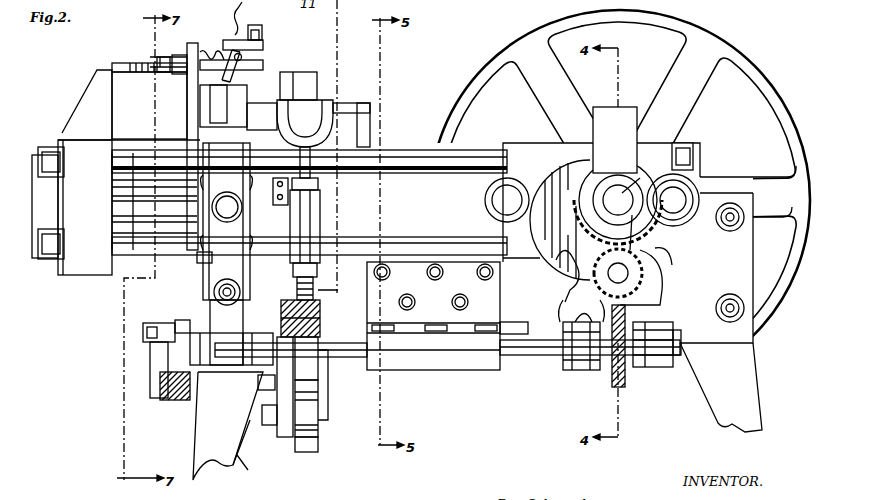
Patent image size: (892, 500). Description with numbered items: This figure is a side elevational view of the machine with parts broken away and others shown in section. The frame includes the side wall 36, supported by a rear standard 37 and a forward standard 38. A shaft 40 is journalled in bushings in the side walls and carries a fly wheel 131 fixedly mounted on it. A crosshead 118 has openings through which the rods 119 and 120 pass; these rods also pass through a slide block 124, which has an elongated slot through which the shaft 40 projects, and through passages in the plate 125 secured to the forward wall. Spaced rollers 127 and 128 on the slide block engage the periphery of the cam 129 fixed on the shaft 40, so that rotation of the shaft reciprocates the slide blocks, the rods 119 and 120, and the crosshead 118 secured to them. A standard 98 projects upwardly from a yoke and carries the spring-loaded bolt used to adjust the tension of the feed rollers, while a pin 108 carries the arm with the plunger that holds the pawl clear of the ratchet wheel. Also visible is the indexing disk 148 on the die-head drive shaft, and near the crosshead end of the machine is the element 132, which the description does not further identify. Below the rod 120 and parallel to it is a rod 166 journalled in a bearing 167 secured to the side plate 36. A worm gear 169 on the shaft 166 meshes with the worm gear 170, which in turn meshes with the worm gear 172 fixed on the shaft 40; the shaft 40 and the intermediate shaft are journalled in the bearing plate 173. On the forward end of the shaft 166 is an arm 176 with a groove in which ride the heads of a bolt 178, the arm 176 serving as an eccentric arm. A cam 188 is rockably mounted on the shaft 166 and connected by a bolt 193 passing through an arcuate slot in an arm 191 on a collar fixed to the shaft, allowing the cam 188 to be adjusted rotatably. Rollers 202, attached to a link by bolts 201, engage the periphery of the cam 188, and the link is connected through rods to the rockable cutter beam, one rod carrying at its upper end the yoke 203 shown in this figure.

The side wall 36 is at (728, 251).
The rear standard 37 is at (718, 408).
The forward standard 38 is at (240, 460).
The shaft 40 is at (663, 132).
The standard 98 is at (195, 108).
The pin 108 is at (248, 17).
The crosshead 118 is at (76, 276).
The rod 119 is at (400, 160).
The rod 120 is at (447, 247).
The slide block 124 is at (520, 160).
The plate 125 is at (197, 262).
The roller 127 is at (705, 176).
The roller 128 is at (482, 198).
The cam 129 is at (545, 333).
The fly wheel 131 is at (742, 64).
The cylinder block 132 is at (132, 160).
The indexing disk 148 is at (178, 300).
The rod 166 is at (318, 363).
The bearing 167 is at (446, 355).
The worm gear 169 is at (626, 378).
The worm gear 170 is at (575, 355).
The worm gear 172 is at (692, 146).
The bearing plate 173 is at (623, 125).
The arm 176 is at (163, 350).
The bolt 178 is at (165, 338).
The cam 188 is at (308, 398).
The arm 191 is at (258, 405).
The bolt 193 is at (258, 382).
The bolt 201 is at (320, 318).
The roller 202 is at (297, 308).
The yoke 203 is at (315, 172).